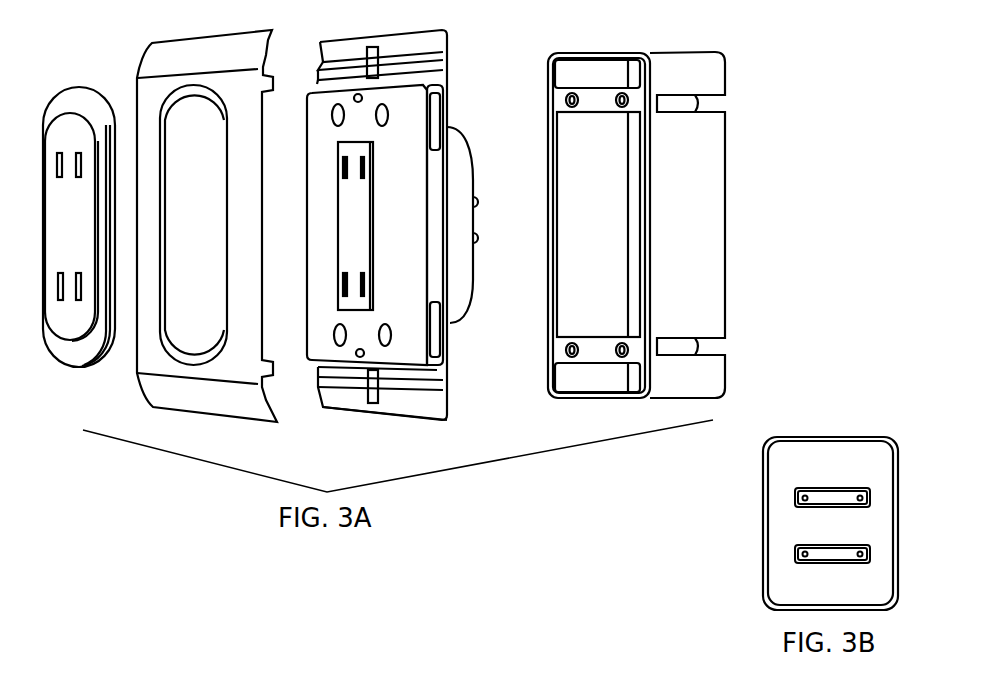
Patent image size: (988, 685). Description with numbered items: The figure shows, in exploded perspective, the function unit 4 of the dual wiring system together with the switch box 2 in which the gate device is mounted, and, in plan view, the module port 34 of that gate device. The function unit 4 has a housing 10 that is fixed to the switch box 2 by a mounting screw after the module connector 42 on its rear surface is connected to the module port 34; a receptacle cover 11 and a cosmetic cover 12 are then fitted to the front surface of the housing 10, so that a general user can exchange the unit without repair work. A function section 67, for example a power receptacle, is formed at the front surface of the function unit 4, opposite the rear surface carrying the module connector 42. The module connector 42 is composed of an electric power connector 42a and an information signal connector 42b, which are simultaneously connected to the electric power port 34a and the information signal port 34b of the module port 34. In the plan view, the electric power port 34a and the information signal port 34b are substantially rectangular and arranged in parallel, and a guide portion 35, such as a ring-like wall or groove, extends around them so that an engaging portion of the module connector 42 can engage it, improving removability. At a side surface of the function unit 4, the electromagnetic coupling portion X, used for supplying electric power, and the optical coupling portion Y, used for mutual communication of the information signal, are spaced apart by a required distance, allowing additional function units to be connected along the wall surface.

In FIG. 3A, the switch box 2 is at (680, 68).
In FIG. 3A, the function unit 4 is at (450, 47).
In FIG. 3A, the housing 10 is at (327, 172).
In FIG. 3A, the receptacle cover 11 is at (84, 102).
In FIG. 3A, the cosmetic cover 12 is at (163, 87).
In FIG. 3A, the module connector 42 is at (467, 307).
In FIG. 3A, the electric power connector 42a is at (475, 197).
In FIG. 3A, the information signal connector 42b is at (475, 245).
In FIG. 3A, the function section 67 is at (357, 223).
In FIG. 3A, the electromagnetic coupling portion X is at (433, 123).
In FIG. 3A, the optical coupling portion Y is at (437, 328).
In FIG. 3B, the module port 34 is at (808, 458).
In FIG. 3B, the guide portion 35 is at (788, 437).
In FIG. 3B, the electric power port 34a is at (792, 497).
In FIG. 3B, the information signal port 34b is at (792, 560).